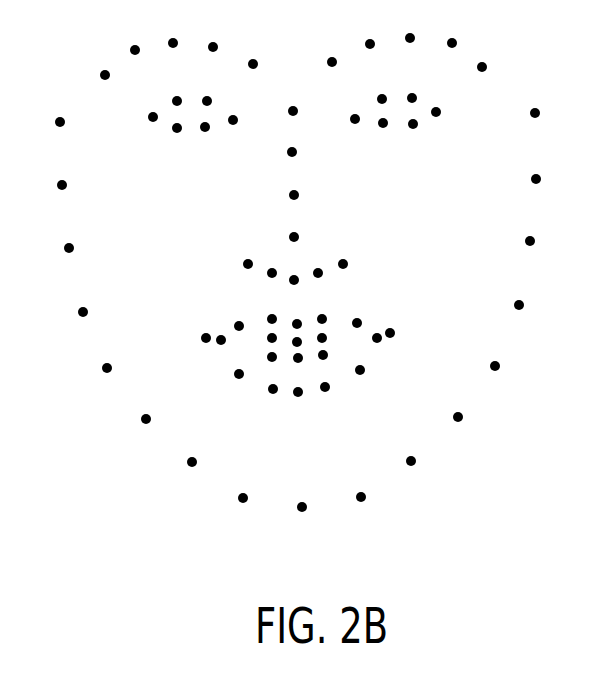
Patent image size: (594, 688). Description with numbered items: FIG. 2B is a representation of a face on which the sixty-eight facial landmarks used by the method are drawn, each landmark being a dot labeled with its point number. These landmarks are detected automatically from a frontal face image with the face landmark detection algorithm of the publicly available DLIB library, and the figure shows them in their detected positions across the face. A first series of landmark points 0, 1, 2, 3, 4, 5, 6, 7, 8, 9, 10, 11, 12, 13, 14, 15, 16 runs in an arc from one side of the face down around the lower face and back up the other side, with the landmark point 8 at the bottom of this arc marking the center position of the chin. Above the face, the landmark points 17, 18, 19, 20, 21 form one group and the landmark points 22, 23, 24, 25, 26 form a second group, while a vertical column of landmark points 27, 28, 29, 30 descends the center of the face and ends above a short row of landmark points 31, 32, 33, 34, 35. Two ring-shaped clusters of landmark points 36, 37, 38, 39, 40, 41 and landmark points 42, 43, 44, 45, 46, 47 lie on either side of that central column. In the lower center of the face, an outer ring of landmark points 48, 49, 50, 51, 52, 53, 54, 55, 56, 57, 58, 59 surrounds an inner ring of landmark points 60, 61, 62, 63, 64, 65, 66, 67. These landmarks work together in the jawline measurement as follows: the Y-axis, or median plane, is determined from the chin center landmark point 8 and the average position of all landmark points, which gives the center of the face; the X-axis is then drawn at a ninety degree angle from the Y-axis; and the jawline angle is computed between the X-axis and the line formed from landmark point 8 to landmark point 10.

The facial landmark 0 is at (63, 117).
The facial landmark 1 is at (65, 180).
The facial landmark 2 is at (72, 243).
The facial landmark 3 is at (86, 307).
The facial landmark 4 is at (110, 363).
The facial landmark 5 is at (149, 414).
The facial landmark 6 is at (195, 457).
The facial landmark 7 is at (246, 493).
The chin center landmark point 8 is at (305, 502).
The facial landmark 9 is at (364, 492).
The jawline landmark point 10 is at (418, 456).
The facial landmark 11 is at (465, 412).
The facial landmark 12 is at (502, 361).
The facial landmark 13 is at (526, 300).
The facial landmark 14 is at (537, 236).
The facial landmark 15 is at (543, 174).
The facial landmark 16 is at (542, 108).
The facial landmark 17 is at (112, 70).
The facial landmark 18 is at (142, 45).
The facial landmark 19 is at (180, 38).
The facial landmark 20 is at (220, 42).
The facial landmark 21 is at (260, 59).
The facial landmark 22 is at (339, 57).
The facial landmark 23 is at (377, 39).
The facial landmark 24 is at (417, 33).
The facial landmark 25 is at (459, 38).
The facial landmark 26 is at (489, 62).
The facial landmark 27 is at (300, 106).
The facial landmark 28 is at (299, 147).
The facial landmark 29 is at (301, 190).
The facial landmark 30 is at (301, 232).
The facial landmark 31 is at (255, 259).
The facial landmark 32 is at (279, 268).
The facial landmark 33 is at (301, 275).
The facial landmark 34 is at (325, 268).
The facial landmark 35 is at (350, 259).
The facial landmark 36 is at (160, 112).
The facial landmark 37 is at (184, 96).
The facial landmark 38 is at (214, 96).
The facial landmark 39 is at (240, 115).
The facial landmark 40 is at (212, 122).
The facial landmark 41 is at (184, 123).
The facial landmark 42 is at (362, 114).
The facial landmark 43 is at (389, 94).
The facial landmark 44 is at (419, 93).
The facial landmark 45 is at (443, 107).
The facial landmark 46 is at (420, 119).
The facial landmark 47 is at (390, 118).
The facial landmark 48 is at (213, 333).
The facial landmark 49 is at (246, 321).
The facial landmark 50 is at (279, 314).
The facial landmark 51 is at (304, 319).
The facial landmark 52 is at (329, 314).
The facial landmark 53 is at (364, 318).
The facial landmark 54 is at (397, 328).
The facial landmark 55 is at (367, 365).
The facial landmark 56 is at (332, 382).
The facial landmark 57 is at (305, 387).
The facial landmark 58 is at (280, 384).
The facial landmark 59 is at (246, 369).
The facial landmark 60 is at (228, 335).
The facial landmark 61 is at (279, 333).
The facial landmark 62 is at (304, 337).
The facial landmark 63 is at (329, 333).
The facial landmark 64 is at (384, 333).
The facial landmark 65 is at (330, 350).
The facial landmark 66 is at (305, 353).
The facial landmark 67 is at (279, 352).